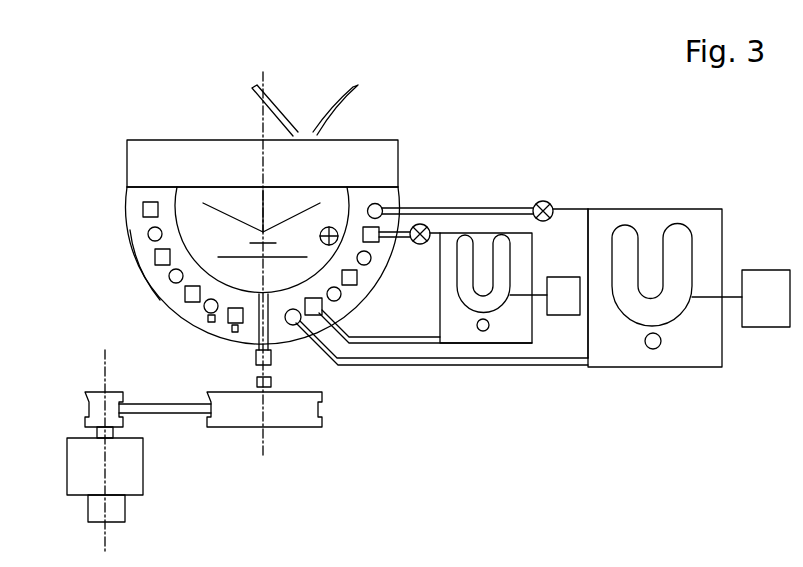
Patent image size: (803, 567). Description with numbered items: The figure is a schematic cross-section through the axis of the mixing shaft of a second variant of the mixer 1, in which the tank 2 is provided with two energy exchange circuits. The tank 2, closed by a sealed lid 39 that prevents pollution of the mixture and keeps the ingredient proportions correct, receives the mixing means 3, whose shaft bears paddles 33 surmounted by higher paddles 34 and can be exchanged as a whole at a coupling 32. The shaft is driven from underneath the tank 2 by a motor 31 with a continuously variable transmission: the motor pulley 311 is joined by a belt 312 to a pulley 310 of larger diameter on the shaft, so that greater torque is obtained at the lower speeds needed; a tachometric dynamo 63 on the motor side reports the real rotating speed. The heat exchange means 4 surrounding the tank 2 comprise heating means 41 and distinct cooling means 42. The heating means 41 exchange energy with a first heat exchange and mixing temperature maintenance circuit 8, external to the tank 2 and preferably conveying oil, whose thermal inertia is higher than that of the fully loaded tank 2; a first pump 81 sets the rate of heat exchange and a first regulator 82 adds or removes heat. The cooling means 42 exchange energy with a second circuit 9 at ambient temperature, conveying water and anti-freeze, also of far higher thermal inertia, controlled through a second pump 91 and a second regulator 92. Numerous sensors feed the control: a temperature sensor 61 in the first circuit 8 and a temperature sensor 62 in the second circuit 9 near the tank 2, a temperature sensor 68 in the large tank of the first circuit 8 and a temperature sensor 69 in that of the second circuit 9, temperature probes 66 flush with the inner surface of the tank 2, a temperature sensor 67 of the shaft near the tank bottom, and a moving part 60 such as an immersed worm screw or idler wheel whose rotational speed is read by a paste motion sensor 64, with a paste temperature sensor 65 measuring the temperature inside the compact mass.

The mixer 1 is at (243, 107).
The tank 2 is at (157, 277).
The mixing means 3 is at (237, 256).
The heat exchange means 4 is at (193, 314).
The first heat exchange and mixing temperature maintenance circuit 8 is at (692, 232).
The second circuit 9 is at (510, 236).
The motor 31 is at (78, 467).
The coupling 32 is at (273, 363).
The paddles 33 is at (277, 284).
The higher paddles 34 is at (216, 216).
The sealed lid 39 is at (167, 160).
The heating means 41 is at (150, 236).
The cooling means 42 is at (143, 209).
The moving part 60 is at (335, 218).
The temperature sensor 61 is at (211, 323).
The temperature sensor 62 is at (234, 332).
The tachometric dynamo 63 is at (90, 507).
The motion sensor 64 is at (401, 237).
The temperature sensor 65 is at (333, 246).
The temperature probes 66 is at (178, 291).
The temperature sensor 67 is at (260, 394).
The temperature sensor 68 is at (653, 349).
The temperature sensor 69 is at (483, 331).
The first pump 81 is at (550, 203).
The first regulator 82 is at (772, 283).
The second pump 91 is at (430, 229).
The second regulator 92 is at (558, 316).
The pulley 310 is at (297, 418).
The motor pulley 311 is at (98, 394).
The belt 312 is at (172, 413).